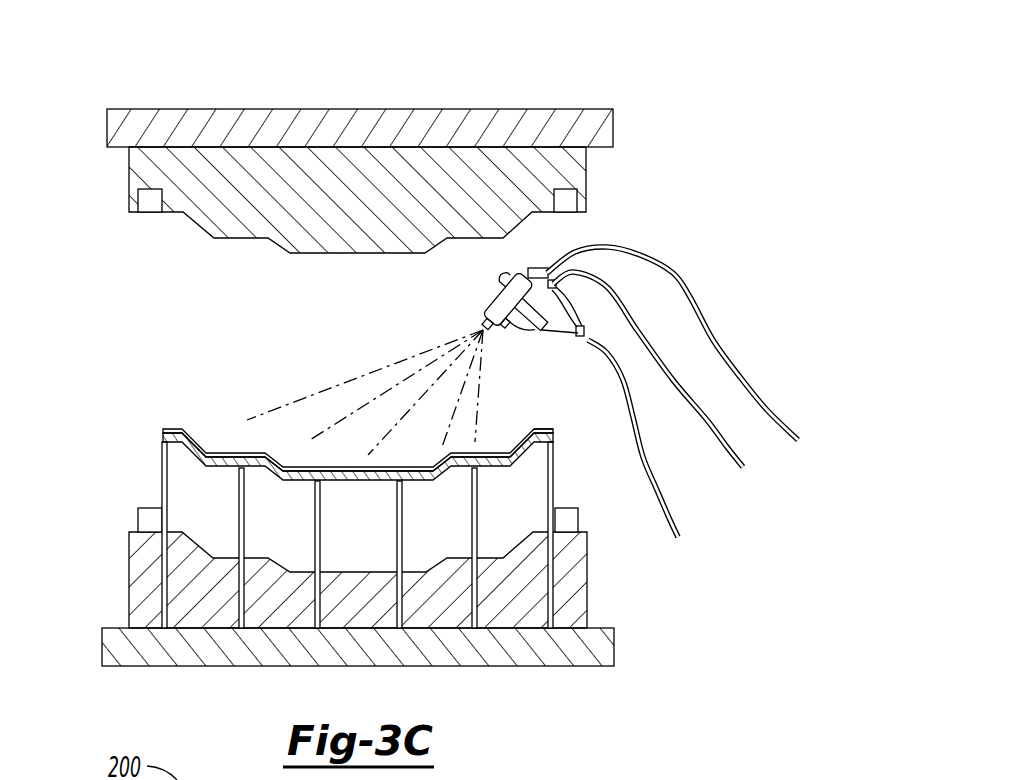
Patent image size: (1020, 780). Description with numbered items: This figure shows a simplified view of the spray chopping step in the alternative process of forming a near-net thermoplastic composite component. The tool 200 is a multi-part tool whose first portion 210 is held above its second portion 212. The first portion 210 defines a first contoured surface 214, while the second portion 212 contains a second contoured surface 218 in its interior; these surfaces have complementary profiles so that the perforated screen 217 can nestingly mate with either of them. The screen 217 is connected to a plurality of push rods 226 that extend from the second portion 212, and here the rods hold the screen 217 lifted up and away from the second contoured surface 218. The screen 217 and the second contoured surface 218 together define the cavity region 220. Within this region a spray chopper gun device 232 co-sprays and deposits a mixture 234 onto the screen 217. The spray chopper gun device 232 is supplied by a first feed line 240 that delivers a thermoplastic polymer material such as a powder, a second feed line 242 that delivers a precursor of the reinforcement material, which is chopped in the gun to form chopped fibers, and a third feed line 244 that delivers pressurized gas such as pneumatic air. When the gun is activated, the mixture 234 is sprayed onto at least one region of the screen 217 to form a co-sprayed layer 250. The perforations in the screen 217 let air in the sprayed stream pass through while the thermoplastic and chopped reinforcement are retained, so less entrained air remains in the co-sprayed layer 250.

The tool 200 is at (193, 66).
The first portion 210 is at (613, 127).
The first contoured surface 214 is at (257, 240).
The second portion 212 is at (614, 655).
The second contoured surface 218 is at (493, 557).
The push rods 226 is at (313, 517).
The screen 217 is at (162, 433).
The mixture 234 is at (177, 428).
The co-sprayed layer 250 is at (540, 427).
The cavity region 220 is at (219, 351).
The spray chopper gun device 232 is at (530, 283).
The first feed line 240 is at (737, 458).
The second feed line 242 is at (758, 408).
The third feed line 244 is at (665, 513).